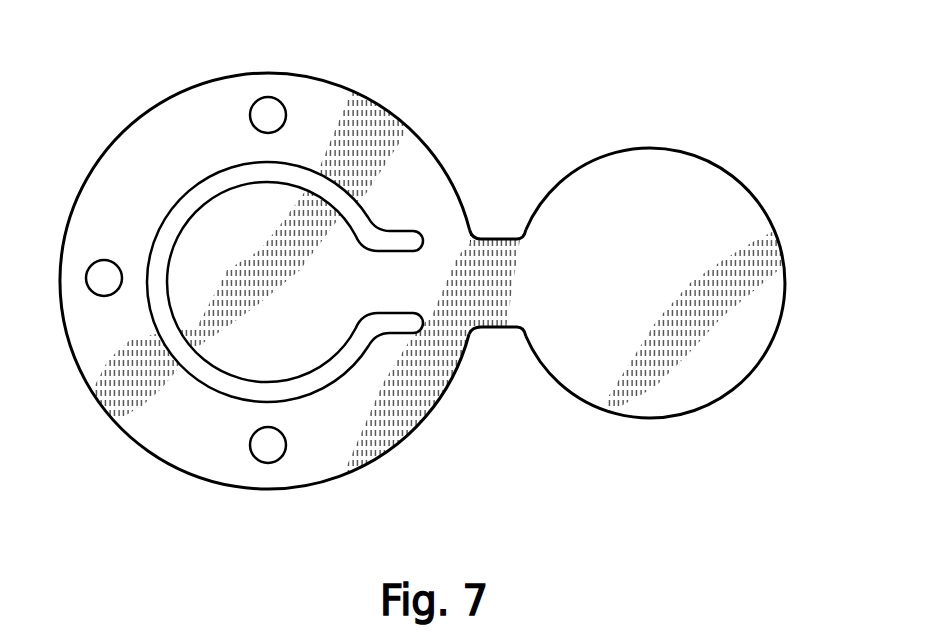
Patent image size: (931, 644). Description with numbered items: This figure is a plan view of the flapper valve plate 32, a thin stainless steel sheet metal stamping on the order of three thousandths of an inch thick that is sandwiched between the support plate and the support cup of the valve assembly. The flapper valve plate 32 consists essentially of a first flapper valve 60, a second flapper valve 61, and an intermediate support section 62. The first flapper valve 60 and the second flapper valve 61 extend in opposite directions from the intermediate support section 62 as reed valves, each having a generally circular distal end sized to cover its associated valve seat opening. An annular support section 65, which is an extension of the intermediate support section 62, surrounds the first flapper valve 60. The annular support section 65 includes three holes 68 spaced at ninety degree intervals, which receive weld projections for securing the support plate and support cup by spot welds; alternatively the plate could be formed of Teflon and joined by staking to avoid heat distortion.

The flapper valve plate 32 is at (590, 96).
The first flapper valve 60 is at (197, 207).
The second flapper valve 61 is at (717, 165).
The intermediate support section 62 is at (500, 267).
The annular support section 65 is at (350, 96).
The holes 68 is at (262, 118).